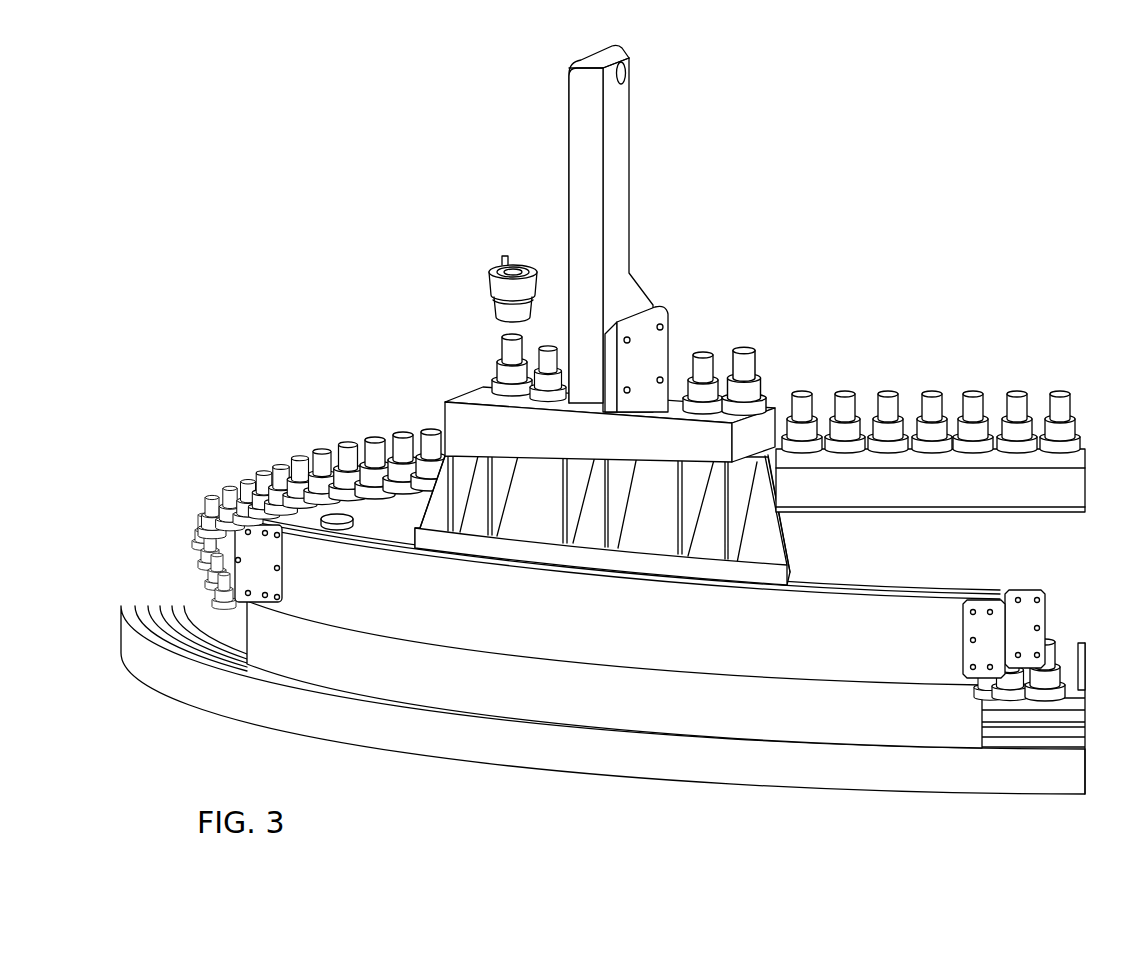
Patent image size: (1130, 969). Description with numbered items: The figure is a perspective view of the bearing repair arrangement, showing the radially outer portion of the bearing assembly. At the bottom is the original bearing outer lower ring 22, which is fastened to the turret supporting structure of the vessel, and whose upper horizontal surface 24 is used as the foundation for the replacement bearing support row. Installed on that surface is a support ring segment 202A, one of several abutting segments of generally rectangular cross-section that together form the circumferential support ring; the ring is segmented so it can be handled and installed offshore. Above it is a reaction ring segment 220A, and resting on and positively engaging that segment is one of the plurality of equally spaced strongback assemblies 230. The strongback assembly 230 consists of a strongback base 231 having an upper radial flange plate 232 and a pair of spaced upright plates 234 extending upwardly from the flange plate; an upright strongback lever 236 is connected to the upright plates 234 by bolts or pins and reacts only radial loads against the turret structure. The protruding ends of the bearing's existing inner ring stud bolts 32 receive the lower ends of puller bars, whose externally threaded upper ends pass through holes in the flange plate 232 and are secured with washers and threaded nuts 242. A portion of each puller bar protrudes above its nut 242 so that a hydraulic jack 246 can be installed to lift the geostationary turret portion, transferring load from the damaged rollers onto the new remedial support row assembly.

The outer lower ring 22 is at (930, 775).
The upper horizontal surface 24 is at (127, 600).
The threaded stud bolts 32 is at (973, 392).
The support ring segment 202A is at (655, 698).
The reaction ring segment 220A is at (923, 605).
The strongback assembly 230 is at (772, 535).
The strongback base 231 is at (540, 515).
The radial flange plate 232 is at (447, 412).
The upright plates 234 is at (665, 345).
The strongback lever 236 is at (580, 124).
The threaded nuts 242 is at (760, 390).
The hydraulic jack 246 is at (486, 283).